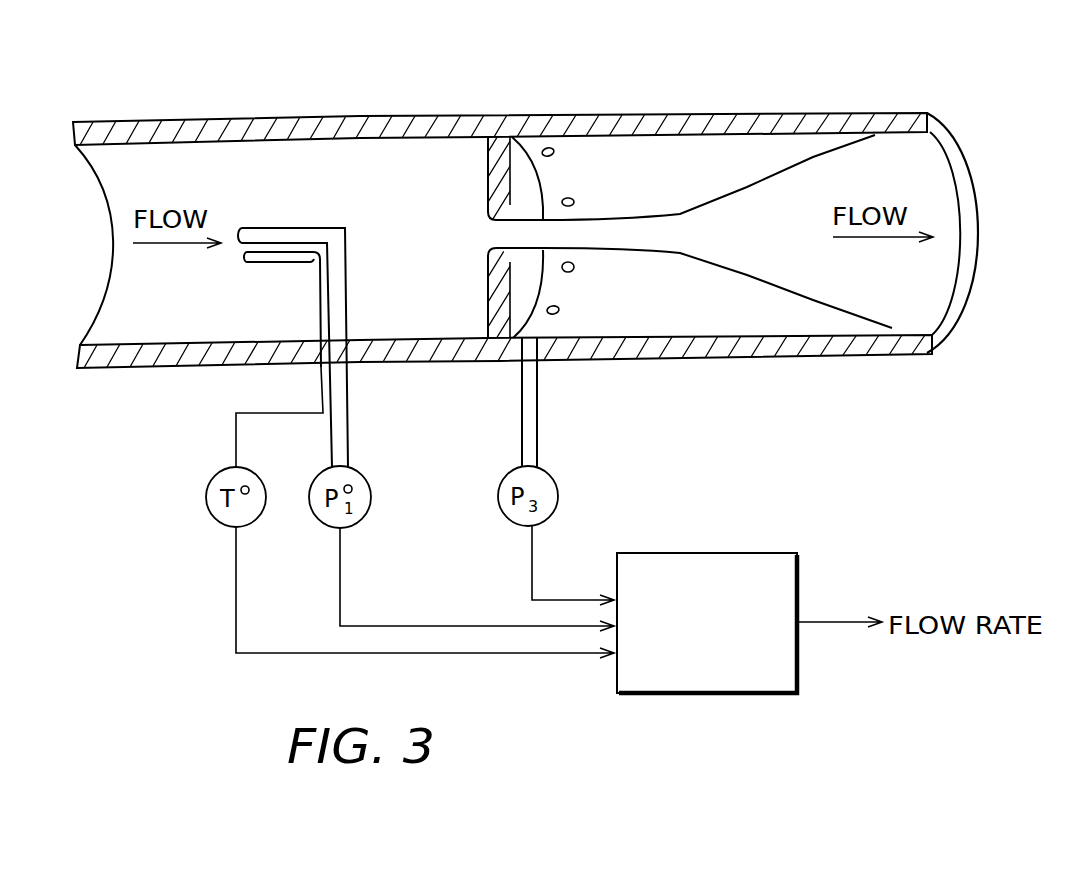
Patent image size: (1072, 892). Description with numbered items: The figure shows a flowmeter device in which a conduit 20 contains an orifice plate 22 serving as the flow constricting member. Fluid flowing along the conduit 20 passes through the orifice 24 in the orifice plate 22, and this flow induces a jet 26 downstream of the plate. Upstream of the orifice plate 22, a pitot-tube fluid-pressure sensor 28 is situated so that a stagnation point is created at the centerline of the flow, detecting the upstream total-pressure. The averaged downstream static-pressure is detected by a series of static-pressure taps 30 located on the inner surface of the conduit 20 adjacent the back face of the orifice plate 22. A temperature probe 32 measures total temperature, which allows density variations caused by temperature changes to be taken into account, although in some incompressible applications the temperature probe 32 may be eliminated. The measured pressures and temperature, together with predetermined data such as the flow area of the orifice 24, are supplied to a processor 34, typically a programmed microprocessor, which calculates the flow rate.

The conduit 20 is at (282, 120).
The orifice plate 22 is at (523, 182).
The orifice 24 is at (503, 236).
The jet 26 is at (652, 250).
The pitot-tube fluid-pressure sensor 28 is at (293, 228).
The static-pressure taps 30 is at (577, 200).
The temperature probe 32 is at (270, 260).
The processor 34 is at (760, 553).